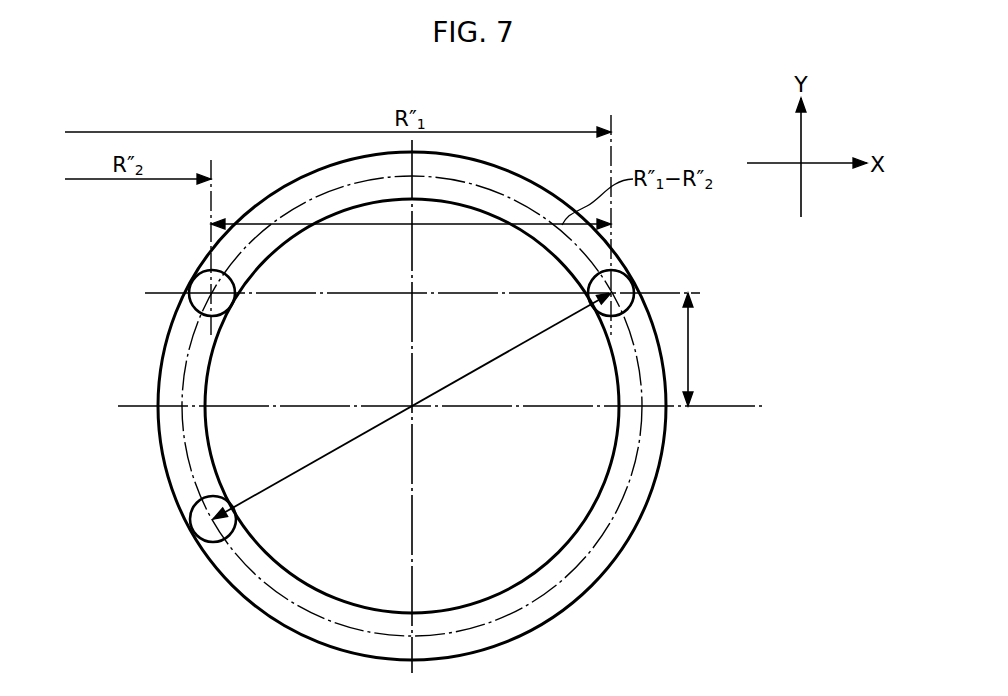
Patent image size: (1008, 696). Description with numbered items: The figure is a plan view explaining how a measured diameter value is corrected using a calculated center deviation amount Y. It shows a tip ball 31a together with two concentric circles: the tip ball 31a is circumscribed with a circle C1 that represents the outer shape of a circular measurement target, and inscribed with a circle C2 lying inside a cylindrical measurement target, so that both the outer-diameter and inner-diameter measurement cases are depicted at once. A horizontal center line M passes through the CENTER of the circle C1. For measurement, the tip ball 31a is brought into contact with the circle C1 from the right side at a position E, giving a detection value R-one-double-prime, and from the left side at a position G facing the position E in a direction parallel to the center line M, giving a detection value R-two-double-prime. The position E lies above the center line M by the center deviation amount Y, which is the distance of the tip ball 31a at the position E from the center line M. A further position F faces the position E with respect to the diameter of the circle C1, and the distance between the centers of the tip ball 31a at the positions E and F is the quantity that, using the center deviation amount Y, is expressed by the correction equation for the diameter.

The tip ball 31a is at (615, 283).
The circle C1 is at (207, 440).
The circle C2 is at (160, 373).
The position E is at (634, 280).
The position F is at (192, 535).
The position G is at (192, 277).
The center line M is at (730, 408).
The center deviation amount Y is at (695, 349).
The center of ring CENTER is at (412, 406).